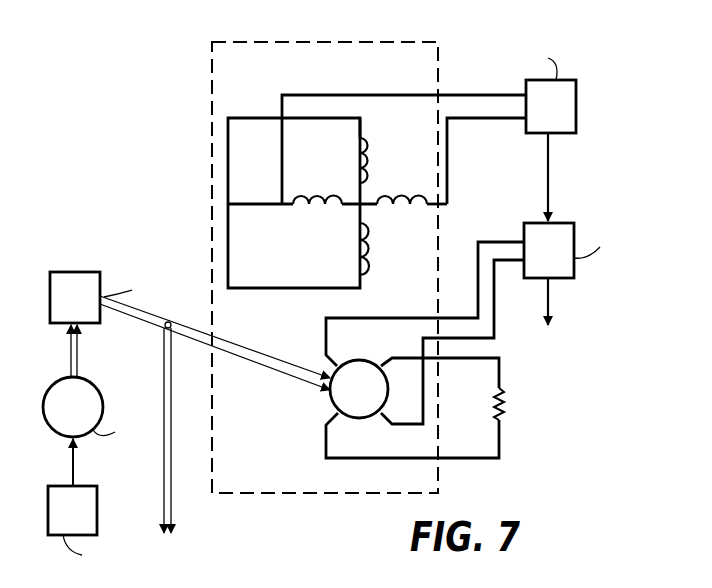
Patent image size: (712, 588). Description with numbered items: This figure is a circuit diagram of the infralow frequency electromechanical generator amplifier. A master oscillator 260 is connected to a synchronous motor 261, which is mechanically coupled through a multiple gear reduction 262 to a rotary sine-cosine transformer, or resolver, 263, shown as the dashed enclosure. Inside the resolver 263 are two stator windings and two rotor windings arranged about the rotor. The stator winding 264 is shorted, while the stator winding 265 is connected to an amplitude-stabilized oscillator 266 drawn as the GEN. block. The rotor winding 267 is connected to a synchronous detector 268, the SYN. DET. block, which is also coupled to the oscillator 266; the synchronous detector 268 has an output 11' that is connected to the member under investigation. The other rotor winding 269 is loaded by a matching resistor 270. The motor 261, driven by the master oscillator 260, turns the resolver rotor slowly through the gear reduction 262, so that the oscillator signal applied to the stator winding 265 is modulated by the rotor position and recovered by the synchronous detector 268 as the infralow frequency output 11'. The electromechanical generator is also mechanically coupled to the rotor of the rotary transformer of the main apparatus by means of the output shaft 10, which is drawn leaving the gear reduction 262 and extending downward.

The output shaft 10 is at (173, 531).
The output 11' is at (569, 301).
The master oscillator 260 is at (80, 503).
The synchronous motor 261 is at (86, 400).
The multiple gear reduction 262 is at (88, 283).
The rotary sine-cosine transformer (resolver) 263 is at (442, 60).
The stator winding 264 is at (362, 130).
The stator winding 265 is at (300, 207).
The amplitude-stabilized oscillator 266 is at (537, 120).
The rotor winding 267 is at (328, 363).
The synchronous detector 268 is at (537, 233).
The rotor winding 269 is at (333, 419).
The matching resistor 270 is at (504, 398).